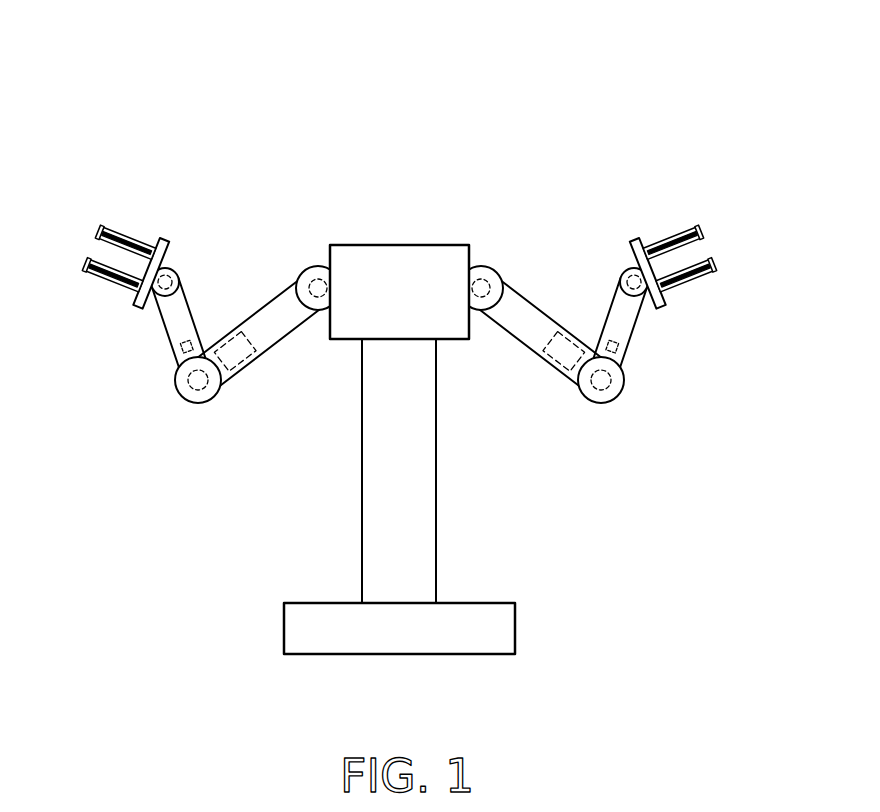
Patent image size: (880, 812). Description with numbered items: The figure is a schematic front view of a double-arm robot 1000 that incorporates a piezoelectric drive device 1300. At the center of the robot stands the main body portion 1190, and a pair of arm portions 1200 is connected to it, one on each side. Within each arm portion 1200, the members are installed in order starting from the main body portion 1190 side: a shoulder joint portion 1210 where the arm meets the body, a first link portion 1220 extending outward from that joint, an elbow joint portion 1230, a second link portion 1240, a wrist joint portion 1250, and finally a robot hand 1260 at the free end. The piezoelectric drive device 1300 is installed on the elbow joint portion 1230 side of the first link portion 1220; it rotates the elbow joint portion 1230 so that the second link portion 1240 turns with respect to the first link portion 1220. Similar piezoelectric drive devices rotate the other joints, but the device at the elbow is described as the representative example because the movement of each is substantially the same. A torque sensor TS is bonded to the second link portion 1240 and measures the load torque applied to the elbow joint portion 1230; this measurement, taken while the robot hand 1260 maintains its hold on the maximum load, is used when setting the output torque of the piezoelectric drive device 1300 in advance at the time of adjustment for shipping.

The double-arm robot 1000 is at (401, 336).
The arm portion 1200 is at (401, 283).
The main body portion 1190 is at (400, 245).
The shoulder joint portion 1210 is at (313, 267).
The first link portion 1220 is at (277, 330).
The elbow joint portion 1230 is at (200, 403).
The second link portion 1240 is at (187, 330).
The wrist joint portion 1250 is at (180, 267).
The robot hand 1260 is at (328, 135).
The piezoelectric drive device 1300 is at (233, 338).
The torque sensor TS is at (178, 347).